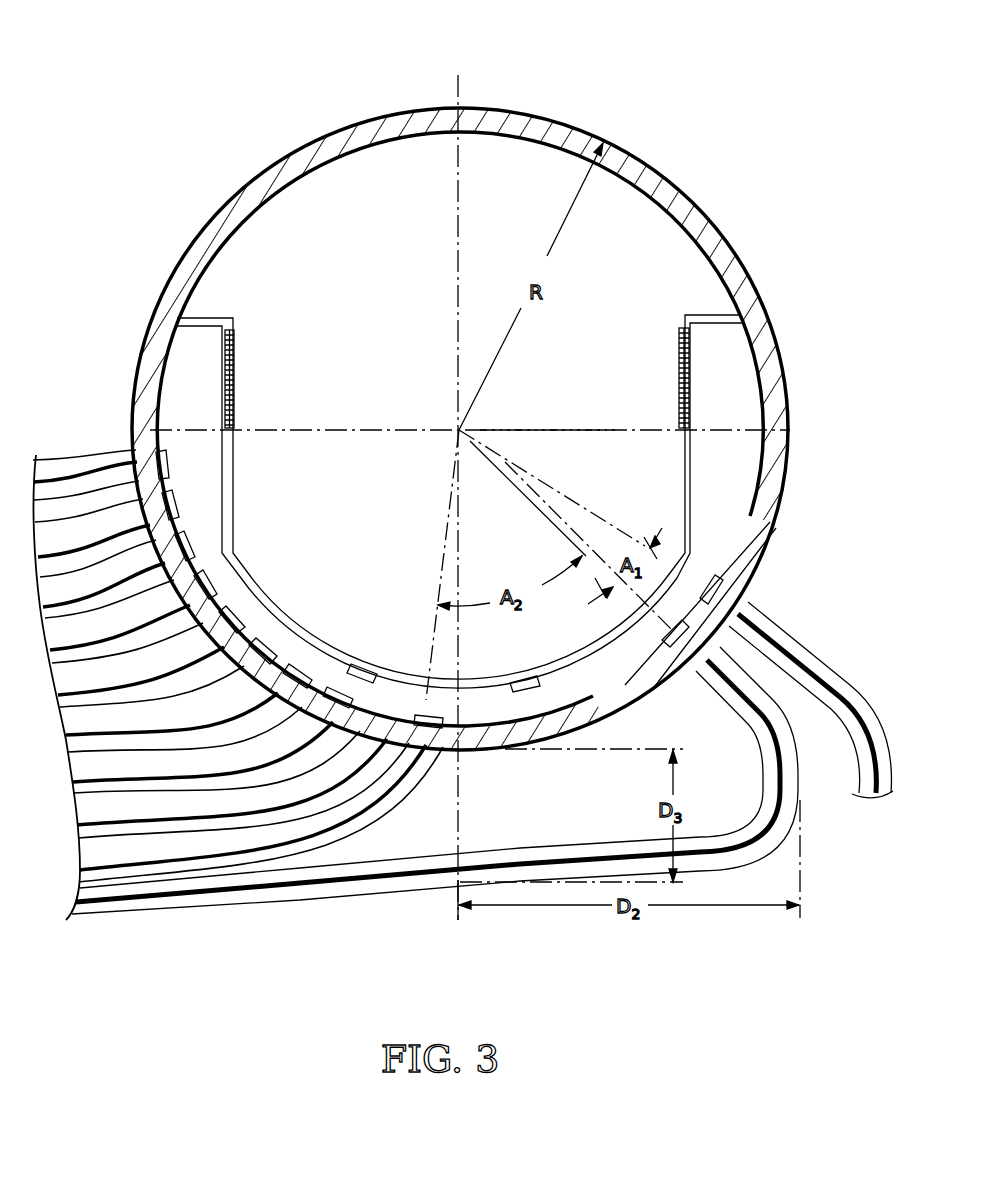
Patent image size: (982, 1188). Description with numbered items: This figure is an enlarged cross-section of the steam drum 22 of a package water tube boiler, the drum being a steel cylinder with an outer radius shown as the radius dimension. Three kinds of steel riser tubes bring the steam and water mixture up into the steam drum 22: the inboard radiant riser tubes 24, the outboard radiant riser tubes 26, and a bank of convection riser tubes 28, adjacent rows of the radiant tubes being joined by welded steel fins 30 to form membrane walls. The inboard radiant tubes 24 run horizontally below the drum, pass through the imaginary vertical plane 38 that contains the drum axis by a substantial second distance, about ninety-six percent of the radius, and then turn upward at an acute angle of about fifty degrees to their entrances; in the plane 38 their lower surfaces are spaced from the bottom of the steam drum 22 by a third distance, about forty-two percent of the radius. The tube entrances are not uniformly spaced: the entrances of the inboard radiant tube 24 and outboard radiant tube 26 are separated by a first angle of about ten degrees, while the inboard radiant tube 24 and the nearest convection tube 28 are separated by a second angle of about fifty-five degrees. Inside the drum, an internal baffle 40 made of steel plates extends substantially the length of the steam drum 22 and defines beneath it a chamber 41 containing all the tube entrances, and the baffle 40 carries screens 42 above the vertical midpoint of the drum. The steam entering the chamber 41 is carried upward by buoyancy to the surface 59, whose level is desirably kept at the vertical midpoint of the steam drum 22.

The steam drum 22 is at (208, 242).
The inboard radiant riser tubes 24 is at (355, 888).
The outboard radiant riser tubes 26 is at (778, 626).
The convection riser tubes 28 is at (98, 458).
The welded steel fins 30 is at (818, 678).
The imaginary vertical plane 38 is at (460, 905).
The internal baffle 40 is at (697, 497).
The chamber 41 is at (715, 568).
The screens 42 is at (693, 365).
The surface 59 is at (545, 430).